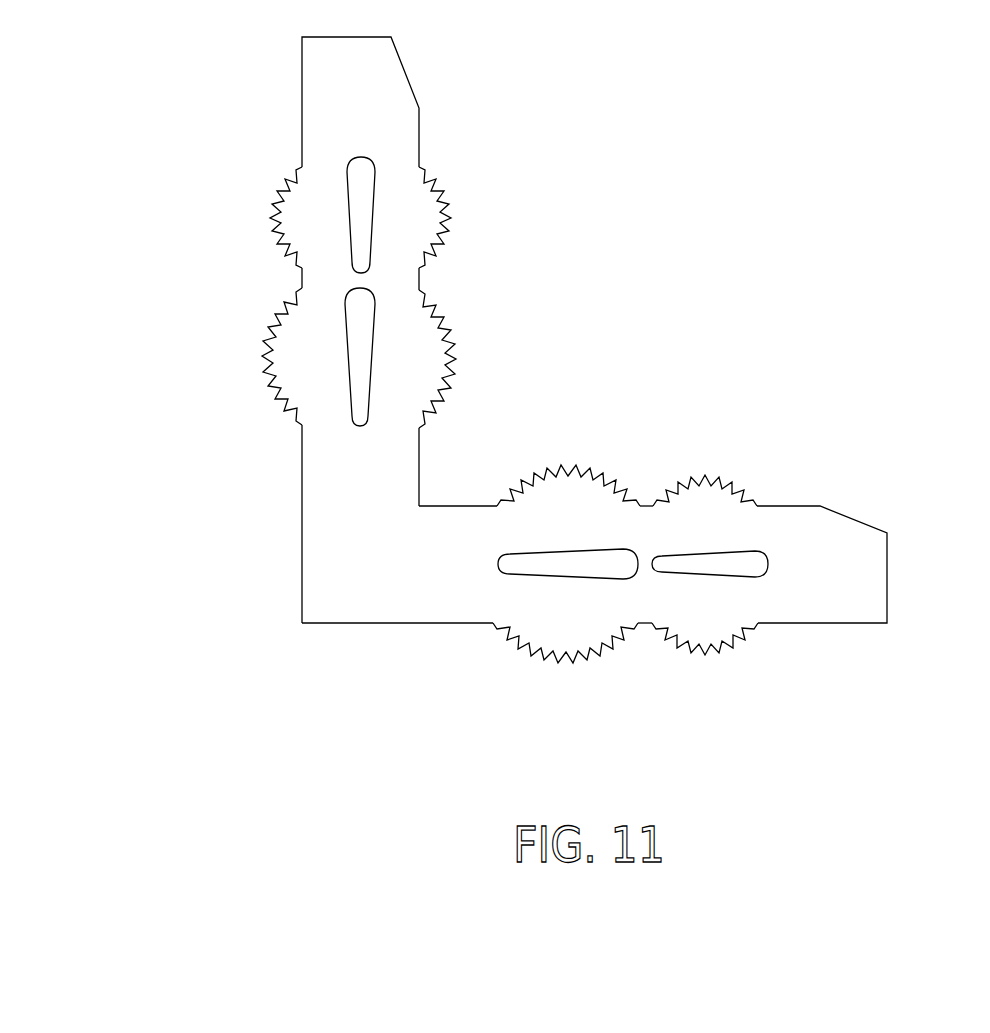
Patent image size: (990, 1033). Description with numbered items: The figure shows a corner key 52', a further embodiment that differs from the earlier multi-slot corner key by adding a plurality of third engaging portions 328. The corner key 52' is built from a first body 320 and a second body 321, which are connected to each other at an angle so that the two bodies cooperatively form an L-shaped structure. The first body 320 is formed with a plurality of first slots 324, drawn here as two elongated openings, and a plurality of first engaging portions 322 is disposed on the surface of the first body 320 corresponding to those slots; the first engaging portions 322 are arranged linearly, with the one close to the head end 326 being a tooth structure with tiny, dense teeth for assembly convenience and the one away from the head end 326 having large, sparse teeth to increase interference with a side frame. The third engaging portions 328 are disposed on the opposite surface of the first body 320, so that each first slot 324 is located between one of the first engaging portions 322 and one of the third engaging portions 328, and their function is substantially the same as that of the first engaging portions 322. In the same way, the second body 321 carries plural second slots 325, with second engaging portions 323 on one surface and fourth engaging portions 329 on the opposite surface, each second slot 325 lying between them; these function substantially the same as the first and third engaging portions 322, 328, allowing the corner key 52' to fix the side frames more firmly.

The corner key 52' is at (884, 127).
The first body 320 is at (566, 396).
The second body 321 is at (300, 66).
The first engaging portion 322 is at (605, 458).
The second engaging portion 323 is at (473, 236).
The first slot 324 is at (517, 580).
The second slot 325 is at (345, 160).
The head end 326 is at (887, 568).
The third engaging portion 328 is at (590, 670).
The fourth engaging portion 329 is at (255, 232).